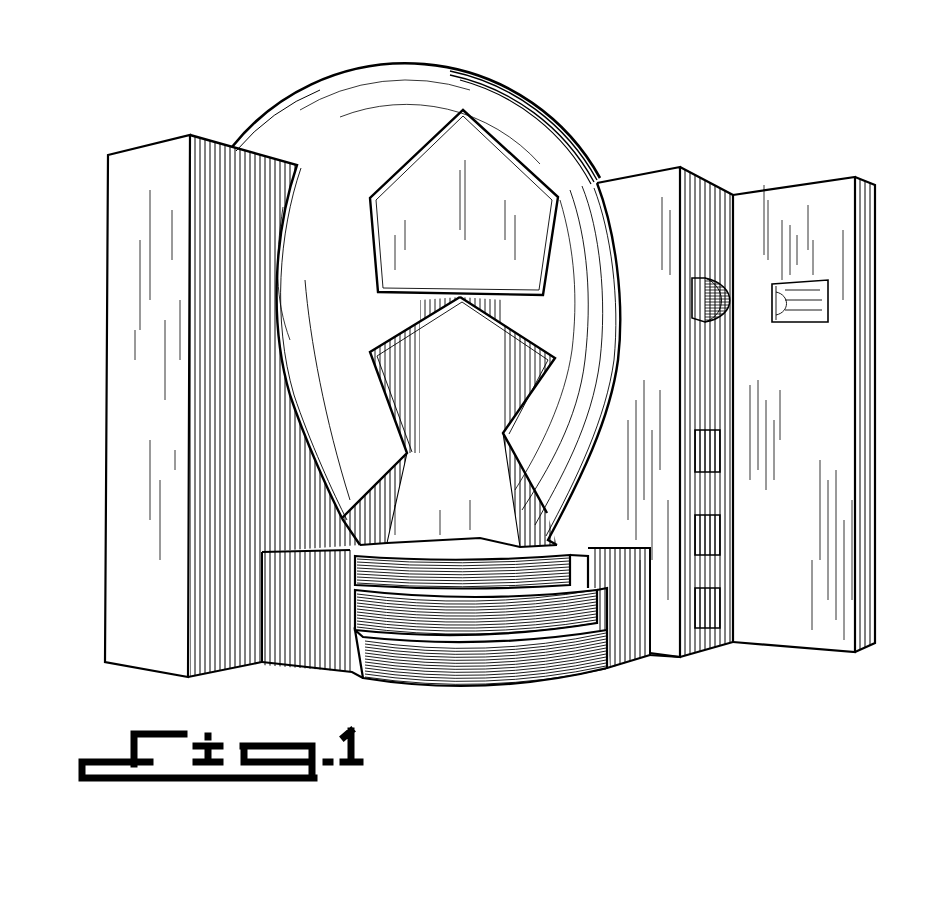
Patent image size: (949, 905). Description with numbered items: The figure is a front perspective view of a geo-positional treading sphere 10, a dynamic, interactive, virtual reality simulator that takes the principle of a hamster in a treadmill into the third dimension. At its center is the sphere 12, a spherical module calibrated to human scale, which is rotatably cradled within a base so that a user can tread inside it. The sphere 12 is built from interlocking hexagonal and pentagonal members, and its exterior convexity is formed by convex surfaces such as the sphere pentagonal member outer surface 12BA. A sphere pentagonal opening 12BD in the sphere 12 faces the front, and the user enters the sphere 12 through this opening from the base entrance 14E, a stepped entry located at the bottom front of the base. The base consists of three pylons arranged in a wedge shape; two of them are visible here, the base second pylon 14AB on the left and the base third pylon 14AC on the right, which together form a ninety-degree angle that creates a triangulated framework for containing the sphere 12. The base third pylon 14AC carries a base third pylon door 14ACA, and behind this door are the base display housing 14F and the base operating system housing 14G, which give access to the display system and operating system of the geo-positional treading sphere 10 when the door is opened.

The geo-positional treading sphere 10 is at (403, 29).
The sphere 12 is at (522, 90).
The sphere pentagonal opening 12BD is at (422, 392).
The sphere pentagonal member outer surface 12BA is at (479, 493).
The base second pylon 14AB is at (150, 146).
The base third pylon 14AC is at (677, 165).
The base third pylon door 14ACA is at (750, 187).
The base entrance 14E is at (531, 672).
The base display housing 14F is at (723, 293).
The base operating system housing 14G is at (714, 452).